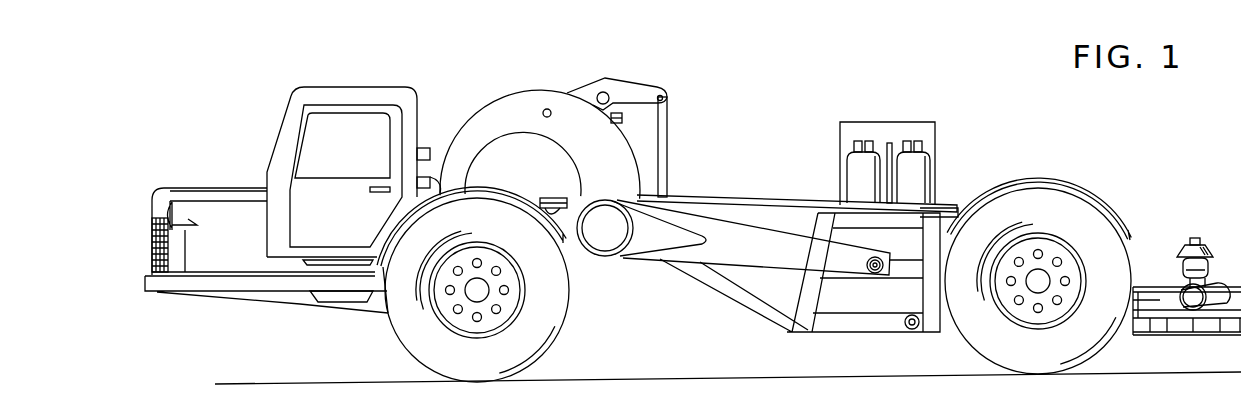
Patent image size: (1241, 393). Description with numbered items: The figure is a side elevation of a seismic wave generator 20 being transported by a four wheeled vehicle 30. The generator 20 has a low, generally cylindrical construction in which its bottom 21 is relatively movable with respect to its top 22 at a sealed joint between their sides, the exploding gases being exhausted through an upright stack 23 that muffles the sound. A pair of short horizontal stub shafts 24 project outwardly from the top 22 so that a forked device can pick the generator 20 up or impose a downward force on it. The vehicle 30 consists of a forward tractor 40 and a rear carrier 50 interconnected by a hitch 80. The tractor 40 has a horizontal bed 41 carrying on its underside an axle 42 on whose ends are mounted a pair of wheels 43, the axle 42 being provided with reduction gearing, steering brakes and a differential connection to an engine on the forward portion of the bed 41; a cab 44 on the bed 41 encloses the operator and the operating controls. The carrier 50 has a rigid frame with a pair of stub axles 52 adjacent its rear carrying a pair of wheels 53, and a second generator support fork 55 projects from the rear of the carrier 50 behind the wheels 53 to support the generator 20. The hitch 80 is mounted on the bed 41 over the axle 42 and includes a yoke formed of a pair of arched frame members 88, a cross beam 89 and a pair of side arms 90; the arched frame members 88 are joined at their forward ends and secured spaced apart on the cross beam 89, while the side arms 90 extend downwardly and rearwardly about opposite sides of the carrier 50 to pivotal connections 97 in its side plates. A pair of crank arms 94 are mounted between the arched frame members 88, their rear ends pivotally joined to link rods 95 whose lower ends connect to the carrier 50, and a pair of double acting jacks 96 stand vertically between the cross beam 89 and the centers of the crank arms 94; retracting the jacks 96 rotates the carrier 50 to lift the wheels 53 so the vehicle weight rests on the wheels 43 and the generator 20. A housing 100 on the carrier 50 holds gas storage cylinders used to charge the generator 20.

The seismic wave generator 20 is at (1187, 276).
The bottom 21 is at (1232, 323).
The top 22 is at (1212, 272).
The upright stack 23 is at (1203, 250).
The stub shafts 24 is at (1193, 293).
The four wheeled vehicle 30 is at (740, 143).
The forward tractor 40 is at (418, 121).
The bed 41 is at (277, 281).
The axle 42 is at (480, 295).
The wheels 43 is at (543, 337).
The cab 44 is at (362, 93).
The rear carrier 50 is at (950, 203).
The stub axles 52 is at (1040, 278).
The wheels 53 is at (990, 347).
The second generator support fork 55 is at (1173, 297).
The hitch 80 is at (571, 131).
The arched frame members 88 is at (502, 108).
The cross beam 89 is at (605, 237).
The side arms 90 is at (798, 260).
The crank arms 94 is at (627, 90).
The link rods 95 is at (665, 141).
The double acting jacks 96 is at (608, 114).
The pivotal connections 97 is at (877, 272).
The housing for gas storage cylinders 100 is at (867, 122).